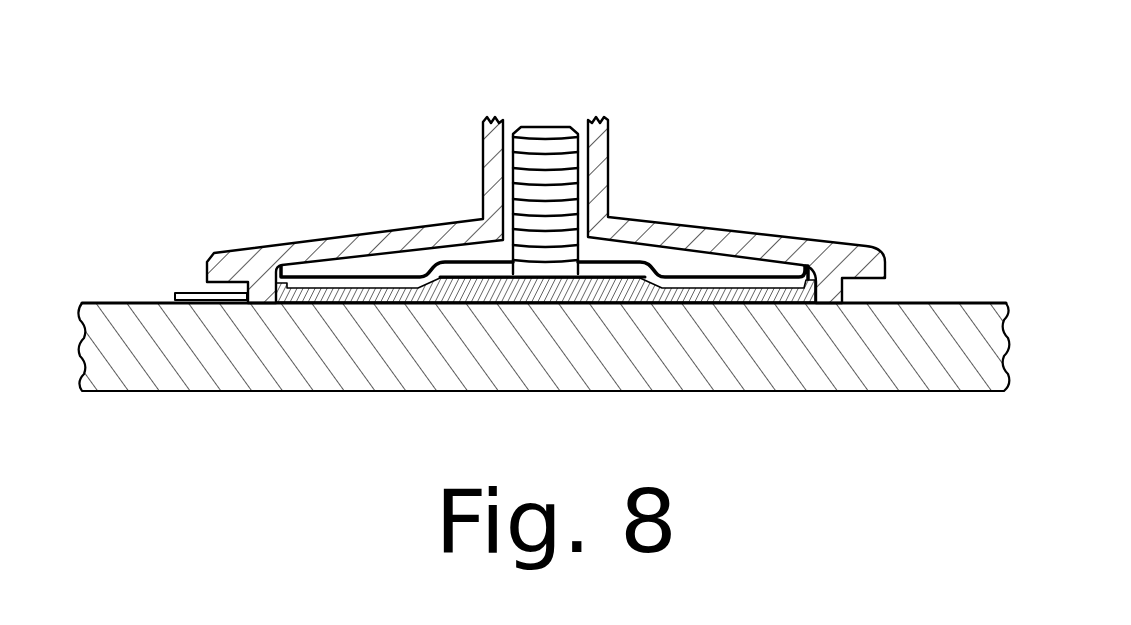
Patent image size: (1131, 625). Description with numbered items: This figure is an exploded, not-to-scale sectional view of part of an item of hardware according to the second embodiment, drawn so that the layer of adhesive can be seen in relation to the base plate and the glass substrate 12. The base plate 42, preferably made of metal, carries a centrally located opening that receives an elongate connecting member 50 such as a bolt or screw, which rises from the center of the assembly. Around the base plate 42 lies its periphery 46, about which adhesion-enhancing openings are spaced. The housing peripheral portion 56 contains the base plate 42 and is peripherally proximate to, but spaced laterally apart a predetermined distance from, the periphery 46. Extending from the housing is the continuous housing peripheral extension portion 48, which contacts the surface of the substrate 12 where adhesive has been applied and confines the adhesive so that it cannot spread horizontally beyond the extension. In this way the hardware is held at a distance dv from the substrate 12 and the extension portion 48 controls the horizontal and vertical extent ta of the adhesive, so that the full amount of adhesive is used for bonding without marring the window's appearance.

The substrate 12 is at (1010, 337).
The base plate 42 is at (785, 278).
The periphery 46 is at (303, 293).
The continuous housing peripheral extension portion 48 is at (185, 298).
The connecting member 50 is at (552, 128).
The housing peripheral portion 56 is at (252, 248).
The distance dv is at (440, 303).
The adhesive thickness ta is at (747, 299).